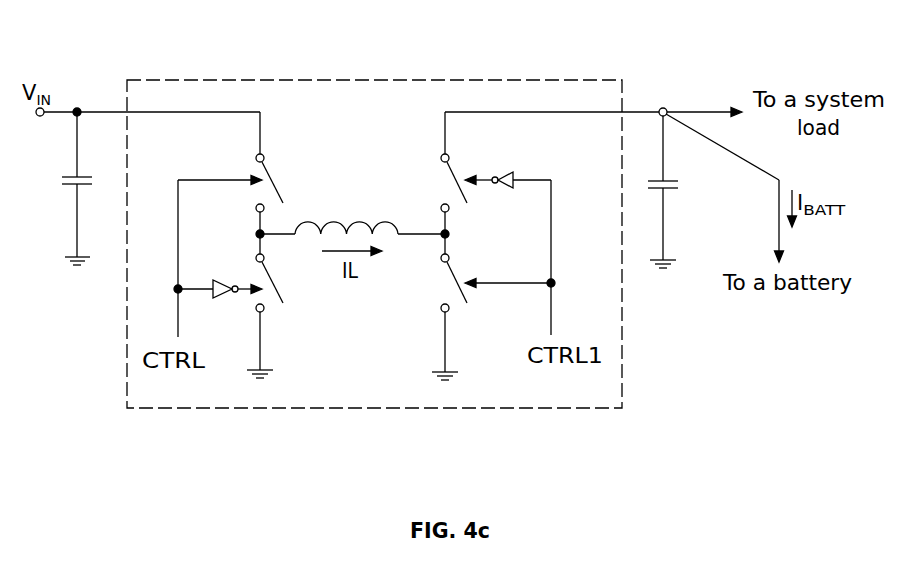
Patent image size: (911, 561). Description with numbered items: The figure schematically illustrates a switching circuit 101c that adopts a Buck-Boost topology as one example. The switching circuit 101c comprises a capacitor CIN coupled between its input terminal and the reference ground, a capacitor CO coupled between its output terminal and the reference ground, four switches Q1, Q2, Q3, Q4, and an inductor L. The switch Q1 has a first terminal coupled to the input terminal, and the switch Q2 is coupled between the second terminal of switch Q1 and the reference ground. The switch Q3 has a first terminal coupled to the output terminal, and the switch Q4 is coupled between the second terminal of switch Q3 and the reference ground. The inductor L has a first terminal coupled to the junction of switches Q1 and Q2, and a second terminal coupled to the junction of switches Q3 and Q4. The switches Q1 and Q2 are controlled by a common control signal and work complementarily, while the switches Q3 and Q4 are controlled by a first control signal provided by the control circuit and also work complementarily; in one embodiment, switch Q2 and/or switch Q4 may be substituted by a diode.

The switching circuit 101c is at (566, 80).
The switch Q1 is at (285, 183).
The switch Q2 is at (283, 316).
The switch Q3 is at (436, 317).
The switch Q4 is at (435, 183).
The inductor L is at (352, 211).
The capacitor C_IN CIN is at (59, 188).
The capacitor C_O CO is at (683, 192).